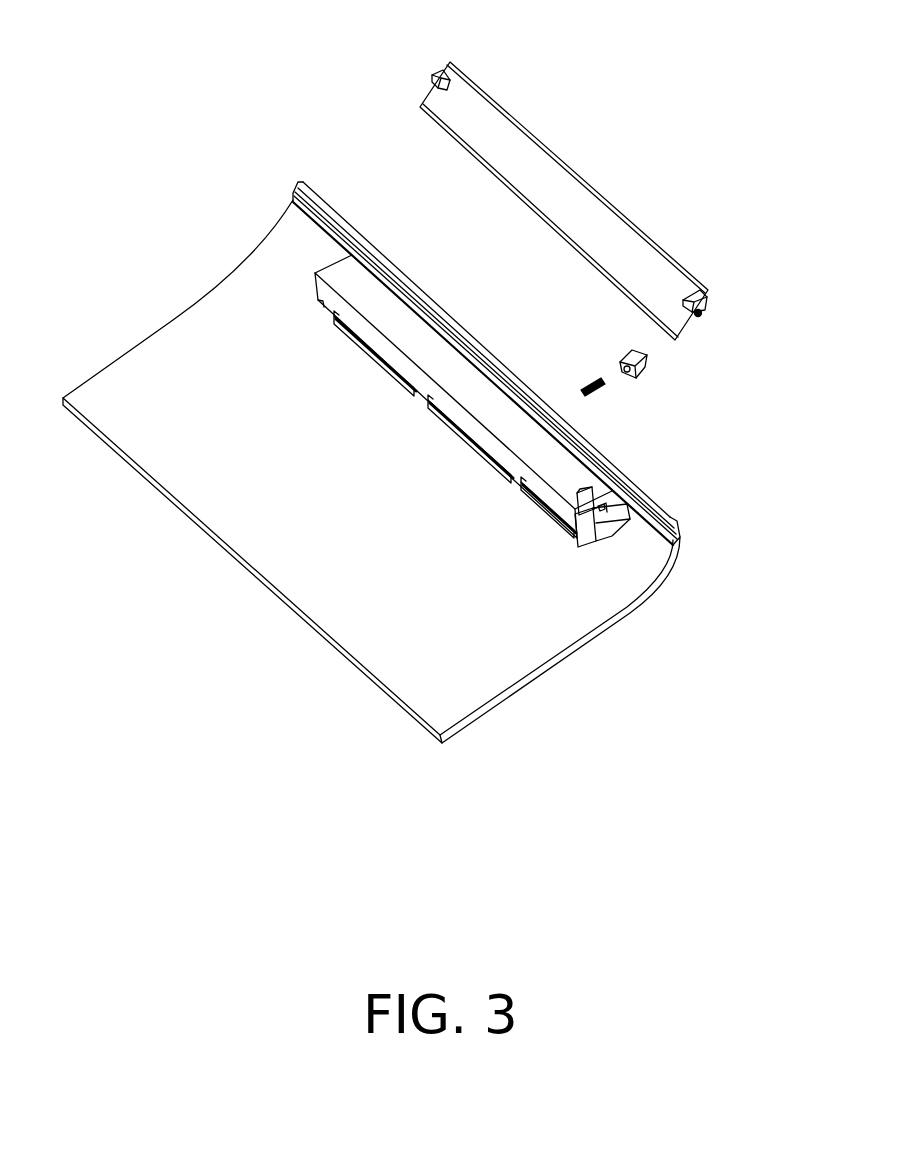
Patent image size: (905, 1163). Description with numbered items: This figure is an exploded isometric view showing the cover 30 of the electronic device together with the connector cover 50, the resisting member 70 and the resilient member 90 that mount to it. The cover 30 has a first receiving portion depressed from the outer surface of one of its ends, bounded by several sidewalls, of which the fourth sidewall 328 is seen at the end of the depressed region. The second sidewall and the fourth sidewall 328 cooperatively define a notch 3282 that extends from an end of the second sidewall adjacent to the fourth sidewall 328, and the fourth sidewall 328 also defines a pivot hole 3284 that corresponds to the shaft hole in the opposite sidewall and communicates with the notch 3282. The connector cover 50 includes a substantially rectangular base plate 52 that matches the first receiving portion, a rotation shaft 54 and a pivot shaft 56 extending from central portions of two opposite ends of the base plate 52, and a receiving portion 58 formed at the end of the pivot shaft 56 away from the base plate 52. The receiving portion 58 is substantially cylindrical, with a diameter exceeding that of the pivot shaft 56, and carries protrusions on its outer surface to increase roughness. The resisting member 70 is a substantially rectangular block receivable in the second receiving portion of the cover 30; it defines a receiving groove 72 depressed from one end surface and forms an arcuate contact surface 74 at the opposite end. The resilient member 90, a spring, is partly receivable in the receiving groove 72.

The cover 30 is at (410, 462).
The fourth sidewall 328 is at (666, 530).
The notch 3282 is at (590, 498).
The pivot hole 3284 is at (601, 507).
The connector cover 50 is at (599, 178).
The base plate 52 is at (543, 180).
The rotation shaft 54 is at (433, 73).
The pivot shaft 56 is at (697, 292).
The receiving portion 58 is at (702, 316).
The resisting member 70 is at (653, 367).
The receiving groove 72 is at (625, 375).
The contact surface 74 is at (648, 360).
The resilient member 90 is at (600, 392).